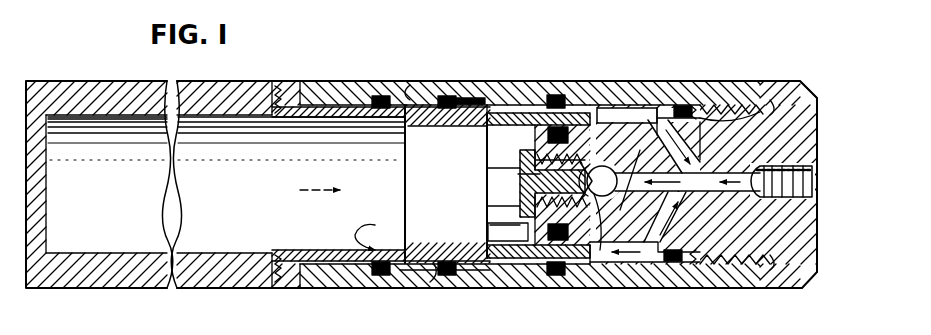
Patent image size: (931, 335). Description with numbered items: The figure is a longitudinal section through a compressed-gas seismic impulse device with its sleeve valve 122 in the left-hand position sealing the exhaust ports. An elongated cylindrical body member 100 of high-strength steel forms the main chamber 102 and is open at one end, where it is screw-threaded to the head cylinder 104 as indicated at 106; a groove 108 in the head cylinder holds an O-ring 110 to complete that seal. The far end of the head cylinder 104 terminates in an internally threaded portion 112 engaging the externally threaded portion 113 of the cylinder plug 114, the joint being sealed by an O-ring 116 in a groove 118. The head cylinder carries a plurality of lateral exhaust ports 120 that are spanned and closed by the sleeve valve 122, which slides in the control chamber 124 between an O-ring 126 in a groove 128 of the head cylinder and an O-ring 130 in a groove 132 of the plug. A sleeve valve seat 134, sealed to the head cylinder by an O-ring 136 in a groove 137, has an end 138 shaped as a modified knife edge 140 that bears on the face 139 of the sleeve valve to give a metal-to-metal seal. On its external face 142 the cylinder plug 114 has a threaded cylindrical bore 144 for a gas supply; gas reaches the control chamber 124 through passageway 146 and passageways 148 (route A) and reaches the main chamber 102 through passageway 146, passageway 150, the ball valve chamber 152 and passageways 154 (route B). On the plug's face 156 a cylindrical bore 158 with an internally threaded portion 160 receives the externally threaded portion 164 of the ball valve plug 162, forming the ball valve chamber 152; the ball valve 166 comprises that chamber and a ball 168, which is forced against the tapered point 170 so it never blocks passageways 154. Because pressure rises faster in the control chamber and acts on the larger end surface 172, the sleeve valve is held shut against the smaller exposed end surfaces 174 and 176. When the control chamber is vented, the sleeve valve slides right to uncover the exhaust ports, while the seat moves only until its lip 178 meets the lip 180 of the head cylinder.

The cylindrical body member 100 is at (116, 86).
The main chamber 102 is at (110, 204).
The head cylinder 104 is at (330, 80).
The screw threaded attachment 106 is at (306, 80).
The groove 108 is at (374, 84).
The O-ring 110 is at (394, 84).
The internally threaded portion 112 is at (792, 80).
The externally threaded portion 113 is at (774, 107).
The cylinder plug 114 is at (800, 78).
The O-ring 116 is at (716, 80).
The groove 118 is at (760, 62).
The lateral exhaust ports 120 is at (504, 92).
The sleeve valve 122 is at (538, 98).
The control chamber 124 is at (706, 58).
The O-ring 126 is at (574, 92).
The groove 128 is at (588, 98).
The O-ring 130 is at (538, 185).
The groove 132 is at (648, 120).
The sleeve valve seat 134 is at (440, 84).
The O-ring 136 is at (410, 126).
The groove 137 is at (468, 90).
The end of sleeve valve seat 138 is at (508, 233).
The face of sleeve valve 139 is at (520, 90).
The modified knife edge 140 is at (426, 284).
The external face 142 is at (816, 207).
The cylindrical bore 144 is at (818, 176).
The passageway 146 is at (720, 172).
The passageways 148 is at (694, 162).
The passageway 150 is at (640, 160).
The ball valve chamber 152 is at (573, 175).
The passageways 154 is at (518, 174).
The face of cylinder plug 156 is at (530, 158).
The cylindrical bore 158 is at (582, 258).
The internally threaded portion 160 is at (490, 224).
The ball valve plug 162 is at (486, 168).
The externally threaded portion 164 is at (485, 206).
The ball valve 166 is at (602, 250).
The ball 168 is at (645, 233).
The point 170 is at (602, 196).
The end surface 172 is at (638, 106).
The exposed end surface 174 is at (468, 238).
The exposed end surface 176 is at (360, 120).
The lip 178 is at (494, 120).
The lip 180 is at (486, 150).